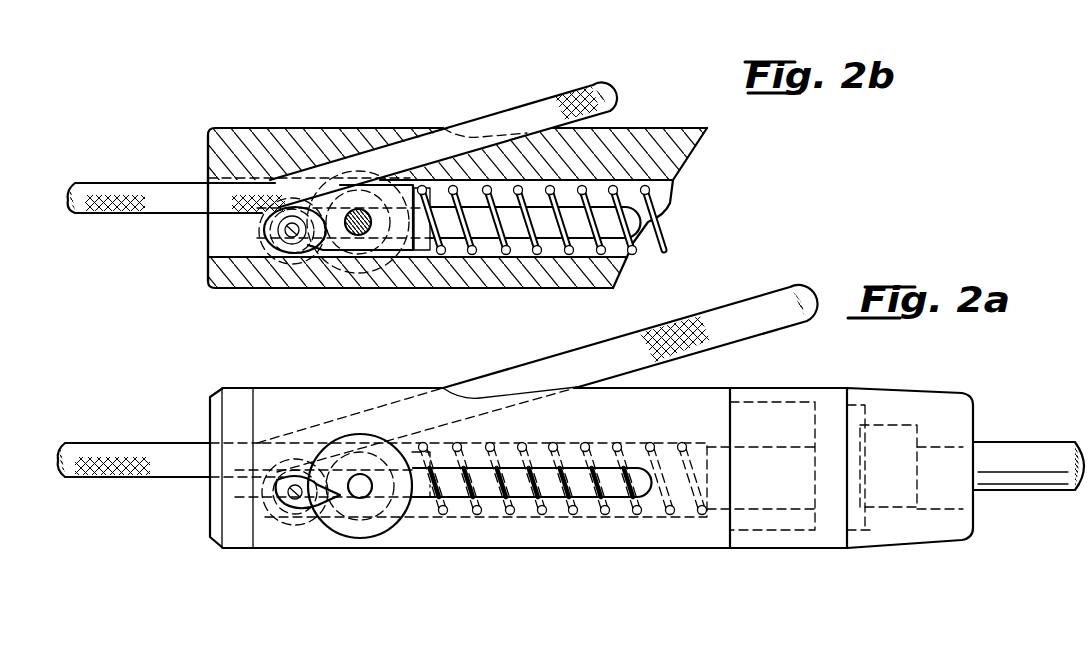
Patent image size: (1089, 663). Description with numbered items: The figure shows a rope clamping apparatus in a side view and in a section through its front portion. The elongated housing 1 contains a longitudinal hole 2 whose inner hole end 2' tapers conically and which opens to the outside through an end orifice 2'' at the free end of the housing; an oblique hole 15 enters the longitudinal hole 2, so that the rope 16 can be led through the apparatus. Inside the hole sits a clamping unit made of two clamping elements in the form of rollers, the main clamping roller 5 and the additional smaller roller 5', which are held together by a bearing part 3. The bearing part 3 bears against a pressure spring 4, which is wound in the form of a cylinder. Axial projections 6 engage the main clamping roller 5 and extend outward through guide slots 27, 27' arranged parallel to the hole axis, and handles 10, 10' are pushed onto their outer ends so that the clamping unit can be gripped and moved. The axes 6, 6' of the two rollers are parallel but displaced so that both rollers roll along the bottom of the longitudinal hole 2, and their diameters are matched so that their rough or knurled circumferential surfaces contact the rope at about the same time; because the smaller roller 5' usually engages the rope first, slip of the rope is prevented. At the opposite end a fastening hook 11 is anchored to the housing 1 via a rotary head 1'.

In FIG. 2B, the housing 1 is at (457, 174).
In FIG. 2A, the housing 1 is at (528, 446).
In FIG. 2A, the rotary head 1' is at (910, 490).
In FIG. 2B, the longitudinal hole 2 is at (417, 295).
In FIG. 2A, the longitudinal hole 2 is at (484, 517).
In FIG. 2A, the inner hole end 2' is at (761, 490).
In FIG. 2B, the end orifice 2'' is at (283, 208).
In FIG. 2A, the end orifice 2'' is at (220, 490).
In FIG. 2B, the bearing part 3 is at (420, 252).
In FIG. 2A, the bearing part 3 is at (416, 521).
In FIG. 2B, the pressure spring 4 is at (556, 225).
In FIG. 2A, the pressure spring 4 is at (590, 498).
In FIG. 2B, the main clamping roller 5 is at (375, 271).
In FIG. 2A, the main clamping roller 5 is at (304, 525).
In FIG. 2B, the additional smaller roller 5' is at (253, 278).
In FIG. 2B, the axial projection 6 is at (343, 261).
In FIG. 2A, the axial projection 6 is at (324, 522).
In FIG. 2B, the axis of smaller roller 6' is at (290, 265).
In FIG. 2A, the axis of smaller roller 6' is at (298, 534).
In FIG. 2B, the handle 10 is at (349, 252).
In FIG. 2A, the handle 10' is at (355, 513).
In FIG. 2A, the fastening hook 11 is at (1032, 482).
In FIG. 2B, the oblique hole 15 is at (626, 134).
In FIG. 2A, the oblique hole 15 is at (644, 395).
In FIG. 2B, the cable 16 is at (116, 183).
In FIG. 2A, the cable 16 is at (114, 443).
In FIG. 2B, the guide slot 27 is at (535, 270).
In FIG. 2A, the guide slot 27' is at (532, 530).